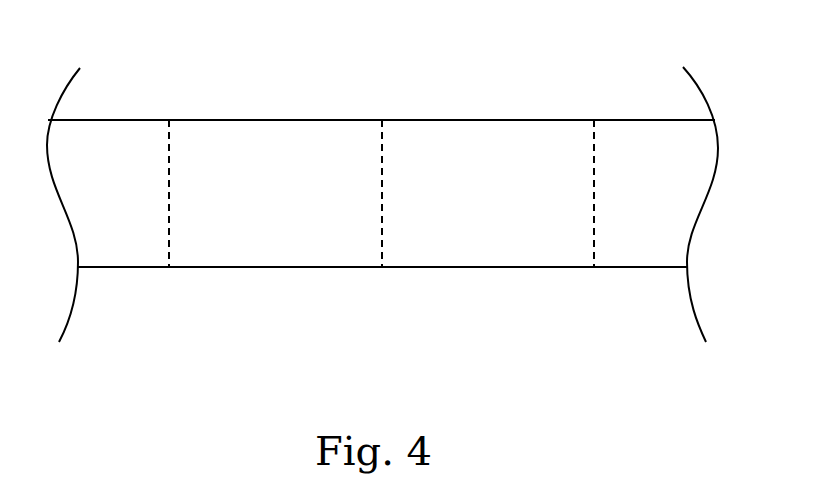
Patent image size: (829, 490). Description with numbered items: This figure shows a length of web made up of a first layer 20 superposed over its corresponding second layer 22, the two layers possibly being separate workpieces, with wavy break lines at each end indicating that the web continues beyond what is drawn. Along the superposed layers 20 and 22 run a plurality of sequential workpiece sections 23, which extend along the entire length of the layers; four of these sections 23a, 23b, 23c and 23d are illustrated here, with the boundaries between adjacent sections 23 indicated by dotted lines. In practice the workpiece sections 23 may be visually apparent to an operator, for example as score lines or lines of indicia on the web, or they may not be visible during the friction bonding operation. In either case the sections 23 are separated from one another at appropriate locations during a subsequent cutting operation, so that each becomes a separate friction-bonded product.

The first layer 20 is at (607, 268).
The second layer 22 is at (628, 267).
The workpiece sections 23 is at (132, 255).
The first workpiece section 23a is at (110, 138).
The second workpiece section 23b is at (277, 138).
The third workpiece section 23c is at (477, 138).
The fourth workpiece section 23d is at (643, 138).